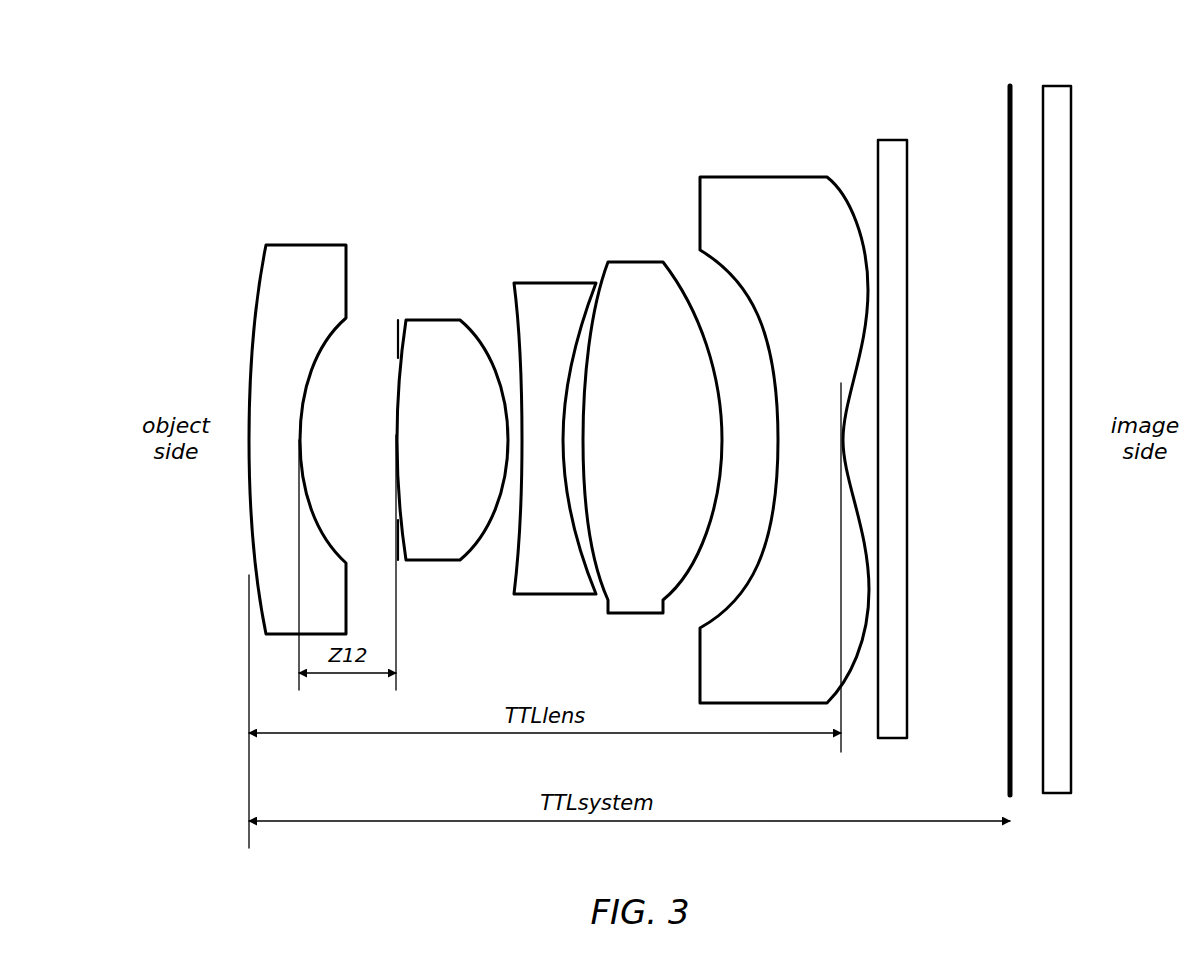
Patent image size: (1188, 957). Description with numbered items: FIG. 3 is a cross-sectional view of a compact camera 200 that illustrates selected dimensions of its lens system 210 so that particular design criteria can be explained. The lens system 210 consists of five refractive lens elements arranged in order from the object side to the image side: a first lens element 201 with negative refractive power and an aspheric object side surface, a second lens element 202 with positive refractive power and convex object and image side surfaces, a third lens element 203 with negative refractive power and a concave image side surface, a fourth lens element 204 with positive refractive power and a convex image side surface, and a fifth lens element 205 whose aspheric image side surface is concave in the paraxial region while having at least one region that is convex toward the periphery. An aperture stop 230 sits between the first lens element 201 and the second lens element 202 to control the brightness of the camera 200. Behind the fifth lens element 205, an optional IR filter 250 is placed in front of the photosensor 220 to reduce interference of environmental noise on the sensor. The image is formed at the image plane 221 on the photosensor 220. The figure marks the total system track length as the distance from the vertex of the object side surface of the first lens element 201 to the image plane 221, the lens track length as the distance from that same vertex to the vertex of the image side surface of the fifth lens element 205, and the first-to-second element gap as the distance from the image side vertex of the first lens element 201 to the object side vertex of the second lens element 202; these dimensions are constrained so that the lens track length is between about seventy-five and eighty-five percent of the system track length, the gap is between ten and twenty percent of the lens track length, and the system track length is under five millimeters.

The camera 200 is at (200, 76).
The lens system 210 is at (246, 110).
The first lens element 201 is at (302, 236).
The second lens element 202 is at (431, 311).
The third lens element 203 is at (551, 274).
The fourth lens element 204 is at (633, 253).
The fifth lens element 205 is at (758, 168).
The aperture stop 230 is at (388, 360).
The IR filter 250 is at (892, 746).
The photosensor 220 is at (1040, 80).
The image plane 221 is at (1010, 804).